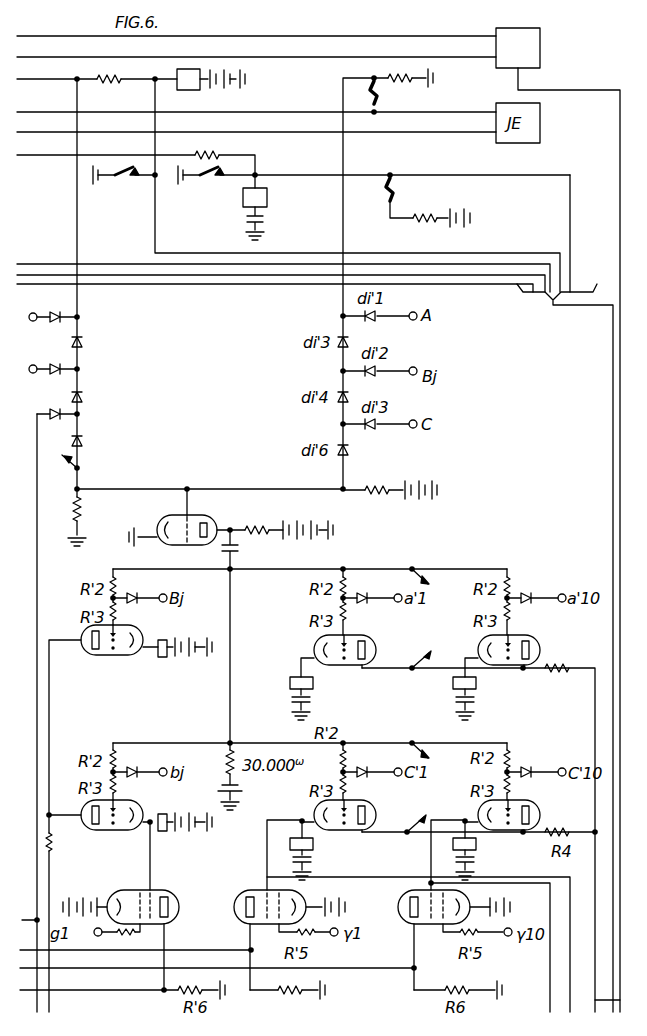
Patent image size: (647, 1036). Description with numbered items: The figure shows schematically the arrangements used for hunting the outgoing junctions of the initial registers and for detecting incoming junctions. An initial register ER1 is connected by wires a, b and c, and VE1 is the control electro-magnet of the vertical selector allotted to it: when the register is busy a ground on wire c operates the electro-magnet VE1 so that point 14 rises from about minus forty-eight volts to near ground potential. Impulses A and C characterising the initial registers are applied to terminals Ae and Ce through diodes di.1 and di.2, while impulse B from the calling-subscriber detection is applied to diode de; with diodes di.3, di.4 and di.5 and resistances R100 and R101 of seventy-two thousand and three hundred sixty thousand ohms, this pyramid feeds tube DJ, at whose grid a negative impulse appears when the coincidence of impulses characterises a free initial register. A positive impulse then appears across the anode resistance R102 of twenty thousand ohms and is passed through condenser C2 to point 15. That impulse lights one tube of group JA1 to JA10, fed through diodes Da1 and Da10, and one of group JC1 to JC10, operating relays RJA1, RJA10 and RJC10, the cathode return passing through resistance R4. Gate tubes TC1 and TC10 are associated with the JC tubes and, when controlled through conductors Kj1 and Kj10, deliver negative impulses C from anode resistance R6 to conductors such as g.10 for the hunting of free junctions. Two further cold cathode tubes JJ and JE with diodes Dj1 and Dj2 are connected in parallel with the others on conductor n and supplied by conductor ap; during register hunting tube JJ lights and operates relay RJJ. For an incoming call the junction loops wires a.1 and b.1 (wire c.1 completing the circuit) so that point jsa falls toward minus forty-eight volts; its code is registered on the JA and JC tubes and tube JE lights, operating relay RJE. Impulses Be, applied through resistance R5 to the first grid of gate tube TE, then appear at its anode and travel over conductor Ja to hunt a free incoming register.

The wire a is at (256, 26).
The wire b is at (256, 47).
The wire c is at (97, 70).
The point 14 is at (110, 69).
The control electro-magnet of vertical selector VE1 is at (208, 89).
The wire a.1 is at (256, 101).
The wire b.1 is at (256, 122).
The wire c.1 is at (136, 155).
The initial register ER1 is at (518, 49).
The point jsa is at (374, 279).
The terminal A.e Ae is at (50, 307).
The diode di.1 is at (63, 306).
The diode di.3 is at (92, 343).
The terminal C.e Ce is at (51, 359).
The diode di.2 is at (47, 380).
The diode di.4 is at (93, 397).
The diode d.e de is at (57, 427).
The diode di.5 is at (93, 442).
The resistance R100 is at (96, 521).
The tube DJ is at (173, 517).
The anode resistance R102 is at (284, 516).
The condenser C2 is at (244, 549).
The resistance R101 is at (390, 482).
The point 15 is at (232, 571).
The diode Dj1 is at (140, 589).
The cold cathode tube JJ is at (103, 729).
The relay RJJ is at (179, 660).
The diode Dj2 is at (140, 763).
The cold cathode tube JE is at (98, 828).
The relay RJE is at (179, 834).
The conductor ap is at (26, 910).
The tube TE is at (121, 896).
The resistance R5 is at (131, 937).
The terminal Be is at (88, 942).
The conductor ja Ja is at (88, 1000).
The conductor g.10 is at (217, 959).
The tube TC1 is at (289, 904).
The conductor kj.1 Kj1 is at (548, 975).
The anode resistance R6 is at (287, 998).
The tube TC10 is at (458, 904).
The conductor kj.10 Kj10 is at (570, 990).
The conductor n is at (599, 1003).
The diode Da1 is at (372, 589).
The cold cathode tube JA1 is at (351, 656).
The relay RJA1 is at (323, 698).
The resistance R4 is at (558, 680).
The diode Da10 is at (536, 589).
The cold cathode tube JA10 is at (524, 655).
The relay RJA10 is at (491, 698).
The cold cathode tube JC1 is at (344, 804).
The cold cathode tube JC10 is at (524, 813).
The relay RJC10 is at (494, 851).